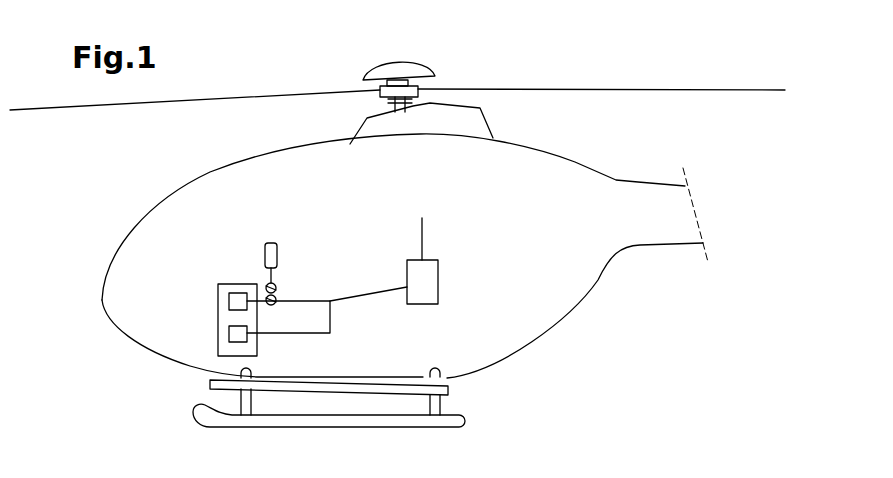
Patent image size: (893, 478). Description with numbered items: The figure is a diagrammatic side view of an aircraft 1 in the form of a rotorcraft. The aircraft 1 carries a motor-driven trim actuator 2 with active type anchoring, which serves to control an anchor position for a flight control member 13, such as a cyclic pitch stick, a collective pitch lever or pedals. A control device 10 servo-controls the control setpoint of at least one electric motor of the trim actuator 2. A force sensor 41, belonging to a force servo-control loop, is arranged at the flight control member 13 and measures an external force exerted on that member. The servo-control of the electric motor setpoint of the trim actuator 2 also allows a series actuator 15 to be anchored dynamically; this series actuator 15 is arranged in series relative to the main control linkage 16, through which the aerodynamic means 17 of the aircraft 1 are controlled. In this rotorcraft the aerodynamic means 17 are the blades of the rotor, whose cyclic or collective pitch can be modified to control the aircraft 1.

The aircraft 1 is at (585, 302).
The aerodynamic means 17 is at (331, 81).
The control device 10 is at (216, 317).
The force sensor 41 is at (238, 293).
The trim actuator 2 is at (218, 333).
The flight control member 13 is at (277, 277).
The main control linkage 16 is at (387, 283).
The series actuator 15 is at (438, 272).